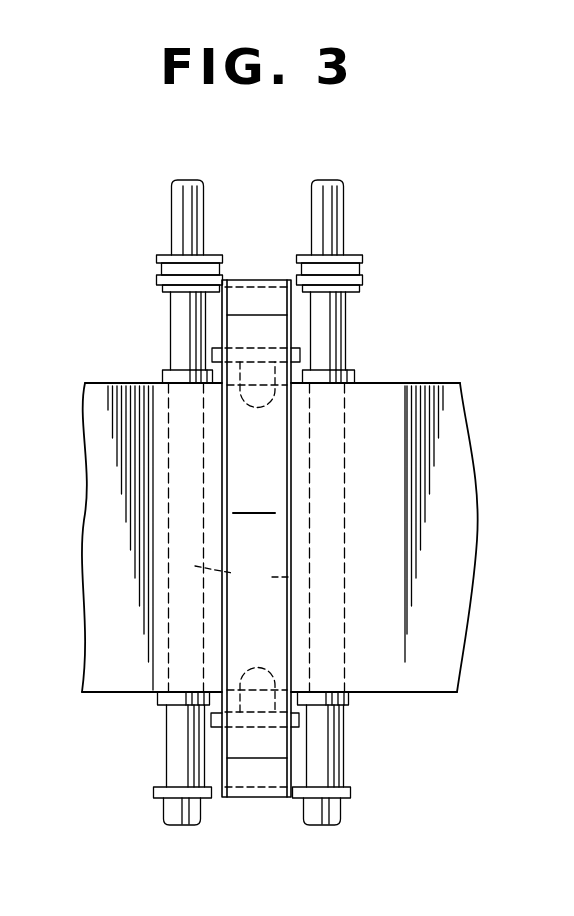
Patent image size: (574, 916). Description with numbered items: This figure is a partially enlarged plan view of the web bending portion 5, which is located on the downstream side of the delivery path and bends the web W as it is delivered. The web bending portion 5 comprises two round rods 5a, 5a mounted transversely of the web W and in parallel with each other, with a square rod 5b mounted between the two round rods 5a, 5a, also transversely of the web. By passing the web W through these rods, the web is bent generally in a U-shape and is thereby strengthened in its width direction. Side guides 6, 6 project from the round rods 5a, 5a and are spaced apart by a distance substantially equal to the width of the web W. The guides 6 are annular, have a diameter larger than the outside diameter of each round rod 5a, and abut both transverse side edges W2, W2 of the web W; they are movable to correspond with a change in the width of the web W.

The web bending portion 5 is at (292, 538).
The round rod 5a is at (242, 580).
The square rod 5b is at (254, 496).
The side guide 6 is at (182, 373).
The web W is at (102, 695).
The transverse side edge of the web W2 is at (443, 383).